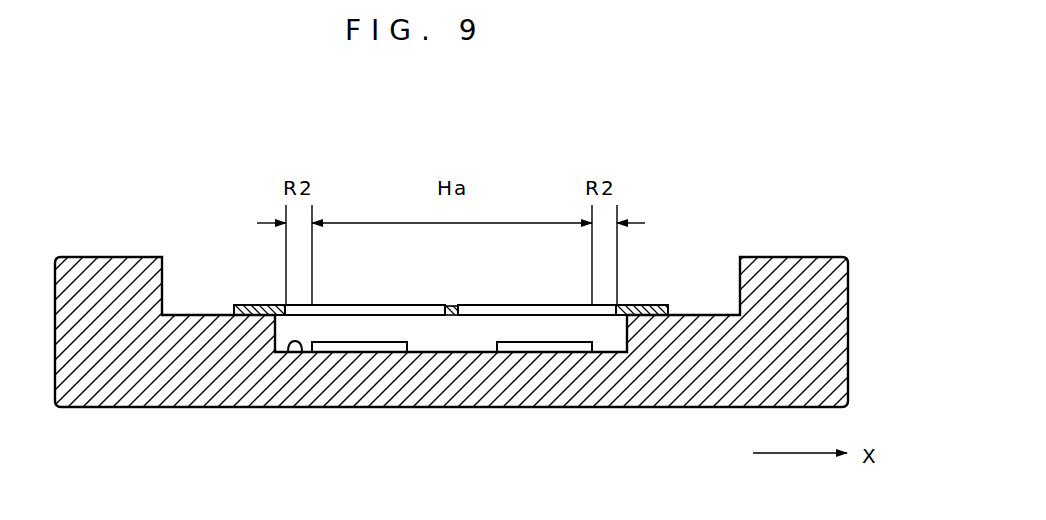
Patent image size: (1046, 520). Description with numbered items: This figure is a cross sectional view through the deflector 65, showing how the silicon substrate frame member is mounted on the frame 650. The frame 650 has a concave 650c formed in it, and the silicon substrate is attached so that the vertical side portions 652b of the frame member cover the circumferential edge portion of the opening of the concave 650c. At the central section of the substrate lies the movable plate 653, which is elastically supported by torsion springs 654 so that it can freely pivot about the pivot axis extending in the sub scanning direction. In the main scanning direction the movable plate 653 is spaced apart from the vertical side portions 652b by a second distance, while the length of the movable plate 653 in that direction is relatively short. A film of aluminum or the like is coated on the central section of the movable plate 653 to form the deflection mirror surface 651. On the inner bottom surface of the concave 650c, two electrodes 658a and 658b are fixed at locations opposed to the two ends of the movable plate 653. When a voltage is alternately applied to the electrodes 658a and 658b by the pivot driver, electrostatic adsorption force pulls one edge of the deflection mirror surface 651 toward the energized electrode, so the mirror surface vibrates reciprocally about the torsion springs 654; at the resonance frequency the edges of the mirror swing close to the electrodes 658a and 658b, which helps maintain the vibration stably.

The deflector 65 is at (792, 170).
The frame 650 is at (813, 326).
The concave 650c is at (300, 346).
The vertical side portions 652b is at (253, 304).
The movable plate 653 is at (450, 288).
The deflection mirror surface 651 is at (378, 312).
The torsion springs 654 is at (452, 306).
The electrode 658a is at (370, 344).
The electrode 658b is at (557, 345).